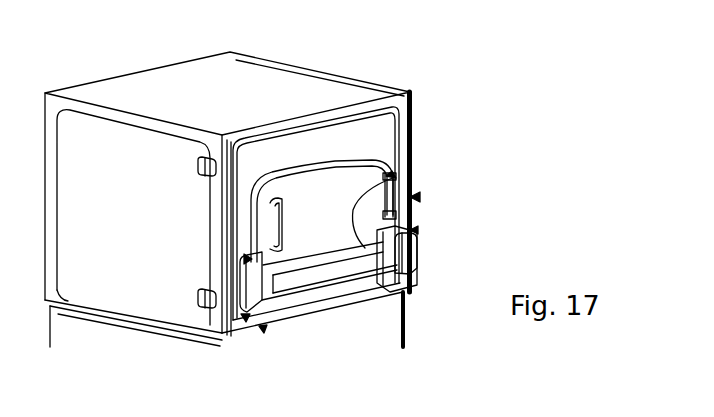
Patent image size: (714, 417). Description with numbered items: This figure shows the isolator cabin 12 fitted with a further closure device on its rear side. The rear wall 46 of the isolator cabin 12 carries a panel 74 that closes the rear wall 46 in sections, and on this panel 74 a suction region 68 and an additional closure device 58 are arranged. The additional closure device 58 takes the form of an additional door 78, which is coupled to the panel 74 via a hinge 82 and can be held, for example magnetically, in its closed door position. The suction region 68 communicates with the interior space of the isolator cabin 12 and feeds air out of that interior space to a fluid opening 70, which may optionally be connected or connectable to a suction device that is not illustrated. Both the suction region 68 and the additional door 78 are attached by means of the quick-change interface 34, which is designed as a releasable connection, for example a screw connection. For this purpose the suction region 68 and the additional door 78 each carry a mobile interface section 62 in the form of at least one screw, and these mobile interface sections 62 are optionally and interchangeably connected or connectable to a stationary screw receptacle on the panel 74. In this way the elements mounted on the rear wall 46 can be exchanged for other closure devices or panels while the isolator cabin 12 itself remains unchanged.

The isolator cabin 12 is at (443, 164).
The quick-change interface 34 is at (420, 197).
The rear wall 46 is at (405, 95).
The additional closure device 58 is at (317, 157).
The mobile interface section 62 is at (392, 173).
The suction region 68 is at (320, 296).
The fluid opening 70 is at (413, 263).
The panel 74 is at (370, 130).
The additional door 78 is at (372, 183).
The hinge 82 is at (365, 248).